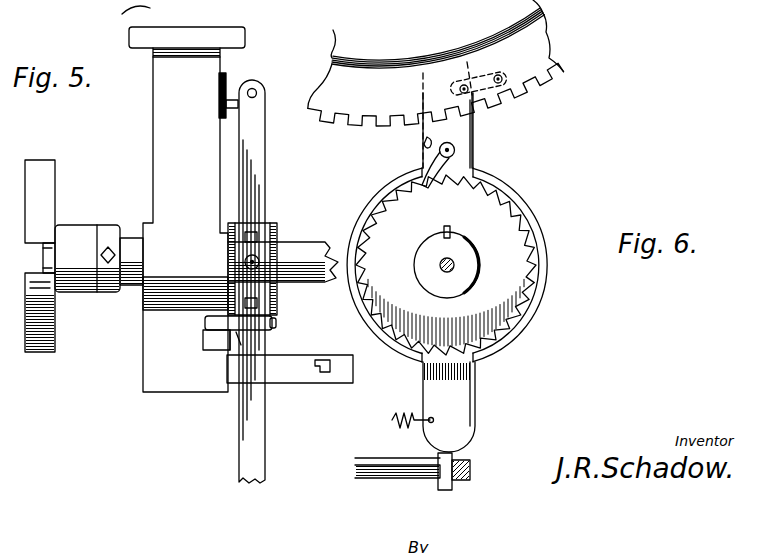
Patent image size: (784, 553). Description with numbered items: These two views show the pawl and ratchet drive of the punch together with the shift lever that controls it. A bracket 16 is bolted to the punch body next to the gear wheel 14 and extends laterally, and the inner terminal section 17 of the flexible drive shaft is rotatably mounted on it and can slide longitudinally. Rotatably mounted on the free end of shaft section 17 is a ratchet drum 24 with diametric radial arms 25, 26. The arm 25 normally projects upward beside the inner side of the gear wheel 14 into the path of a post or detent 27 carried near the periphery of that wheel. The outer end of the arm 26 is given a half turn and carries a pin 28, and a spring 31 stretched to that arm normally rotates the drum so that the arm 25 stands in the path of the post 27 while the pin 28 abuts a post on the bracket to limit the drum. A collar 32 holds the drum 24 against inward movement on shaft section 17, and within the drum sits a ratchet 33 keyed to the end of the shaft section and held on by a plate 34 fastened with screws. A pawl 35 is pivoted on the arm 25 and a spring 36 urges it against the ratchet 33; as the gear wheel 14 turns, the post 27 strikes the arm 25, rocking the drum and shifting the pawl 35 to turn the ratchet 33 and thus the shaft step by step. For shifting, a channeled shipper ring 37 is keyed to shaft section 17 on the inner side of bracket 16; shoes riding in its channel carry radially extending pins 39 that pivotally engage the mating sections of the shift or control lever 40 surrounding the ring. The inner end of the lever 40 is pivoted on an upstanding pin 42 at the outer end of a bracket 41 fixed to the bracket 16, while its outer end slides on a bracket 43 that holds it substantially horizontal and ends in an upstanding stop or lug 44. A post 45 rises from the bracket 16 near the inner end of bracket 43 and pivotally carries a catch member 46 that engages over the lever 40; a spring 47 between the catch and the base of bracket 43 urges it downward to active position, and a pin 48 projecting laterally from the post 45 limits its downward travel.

In FIG. 6, the gear wheel 14 is at (533, 50).
In FIG. 5, the bracket 16 is at (185, 220).
In FIG. 5, the inner terminal section of the flexible drive shaft 17 is at (317, 287).
In FIG. 5, the ratchet drum 24 is at (45, 352).
In FIG. 6, the ratchet drum 24 is at (540, 228).
In FIG. 5, the arm 25 is at (44, 278).
In FIG. 6, the arm 25 is at (440, 80).
In FIG. 5, the arm 26 is at (198, 35).
In FIG. 6, the arm 26 is at (462, 403).
In FIG. 6, the post or detent 27 is at (505, 92).
In FIG. 6, the pin 28 is at (415, 475).
In FIG. 6, the spring 31 is at (403, 410).
In FIG. 5, the collar 32 is at (107, 293).
In FIG. 6, the ratchet 33 is at (508, 258).
In FIG. 6, the plate 34 is at (458, 278).
In FIG. 6, the pawl 35 is at (457, 155).
In FIG. 6, the spring 36 is at (424, 143).
In FIG. 5, the channeled shipper ring 37 is at (277, 237).
In FIG. 5, the radially extending pins 39 is at (259, 258).
In FIG. 5, the shift or control lever 40 is at (253, 452).
In FIG. 5, the bracket 41 is at (230, 90).
In FIG. 5, the upstanding pin 42 is at (258, 92).
In FIG. 5, the bracket 43 is at (293, 375).
In FIG. 5, the stop or lug 44 is at (333, 368).
In FIG. 5, the post 45 is at (213, 343).
In FIG. 5, the catch member 46 is at (278, 323).
In FIG. 5, the spring 47 is at (230, 345).
In FIG. 5, the pin 48 is at (220, 305).